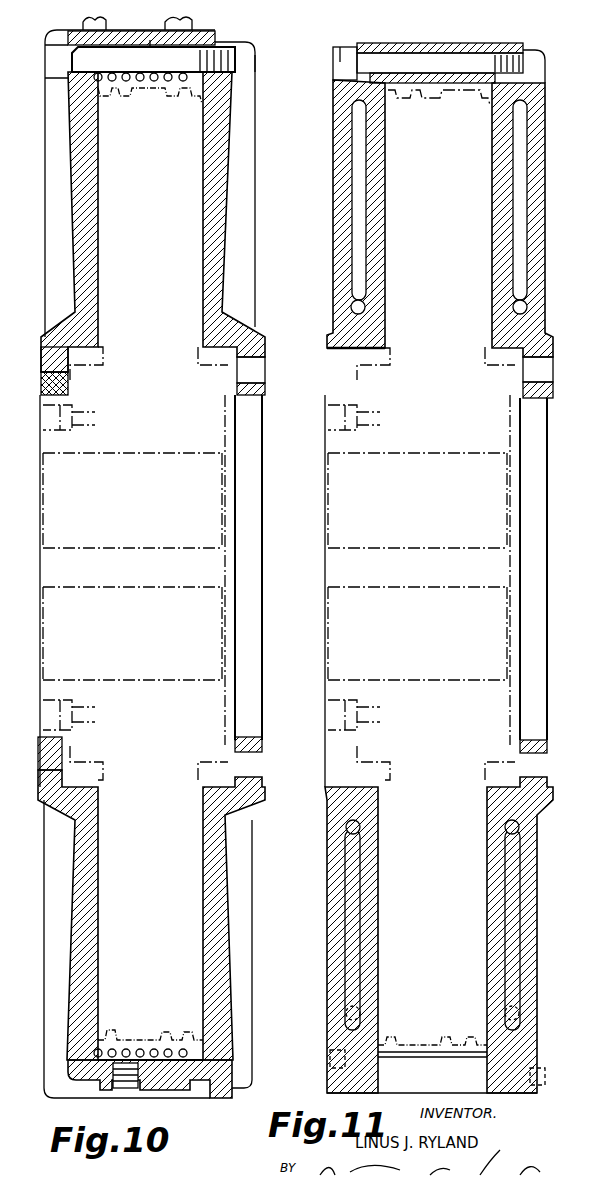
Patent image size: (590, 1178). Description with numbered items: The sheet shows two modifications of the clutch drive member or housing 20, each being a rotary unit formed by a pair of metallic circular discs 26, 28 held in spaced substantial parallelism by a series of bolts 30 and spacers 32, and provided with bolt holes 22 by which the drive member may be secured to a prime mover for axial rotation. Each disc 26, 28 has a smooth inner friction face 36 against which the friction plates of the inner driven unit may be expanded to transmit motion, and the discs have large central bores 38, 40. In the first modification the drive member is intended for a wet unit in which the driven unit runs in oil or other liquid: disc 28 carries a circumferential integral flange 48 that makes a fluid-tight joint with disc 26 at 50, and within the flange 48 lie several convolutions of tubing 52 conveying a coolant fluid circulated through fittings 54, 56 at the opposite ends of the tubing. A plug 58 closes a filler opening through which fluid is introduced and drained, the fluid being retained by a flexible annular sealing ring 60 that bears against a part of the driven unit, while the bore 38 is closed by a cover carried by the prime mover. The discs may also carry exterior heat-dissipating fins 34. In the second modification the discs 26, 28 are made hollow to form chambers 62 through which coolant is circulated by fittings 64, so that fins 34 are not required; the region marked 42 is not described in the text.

In FIG. 10, the drive member 20 is at (236, 168).
In FIG. 11, the drive member 20 is at (332, 183).
In FIG. 10, the bolt holes 22 is at (258, 368).
In FIG. 11, the bolt holes 22 is at (540, 373).
In FIG. 10, the circular disc 26 is at (230, 213).
In FIG. 11, the circular disc 26 is at (545, 195).
In FIG. 10, the circular disc 28 is at (70, 218).
In FIG. 11, the circular disc 28 is at (333, 225).
In FIG. 10, the bolts 30 is at (237, 62).
In FIG. 11, the bolts 30 is at (527, 62).
In FIG. 11, the spacers 32 is at (442, 46).
In FIG. 10, the heat-dissipating fins 34 is at (52, 237).
In FIG. 10, the inner friction face 36 is at (200, 250).
In FIG. 11, the inner friction face 36 is at (490, 213).
In FIG. 10, the central bore 38 is at (248, 400).
In FIG. 11, the central bore 38 is at (530, 400).
In FIG. 10, the central bore 40 is at (50, 368).
In FIG. 11, the central bore 40 is at (340, 352).
In FIG. 10, the seal 42 is at (34, 379).
In FIG. 10, the circumferential integral flange 48 is at (153, 56).
In FIG. 10, the fluid-tight joint 50 is at (213, 37).
In FIG. 10, the tubing 52 is at (157, 82).
In FIG. 10, the fitting 54 is at (88, 20).
In FIG. 10, the fitting 56 is at (198, 22).
In FIG. 10, the plug 58 is at (125, 1090).
In FIG. 10, the flexible annular sealing ring 60 is at (42, 740).
In FIG. 11, the chambers 62 is at (357, 270).
In FIG. 11, the fittings 64 is at (336, 1067).